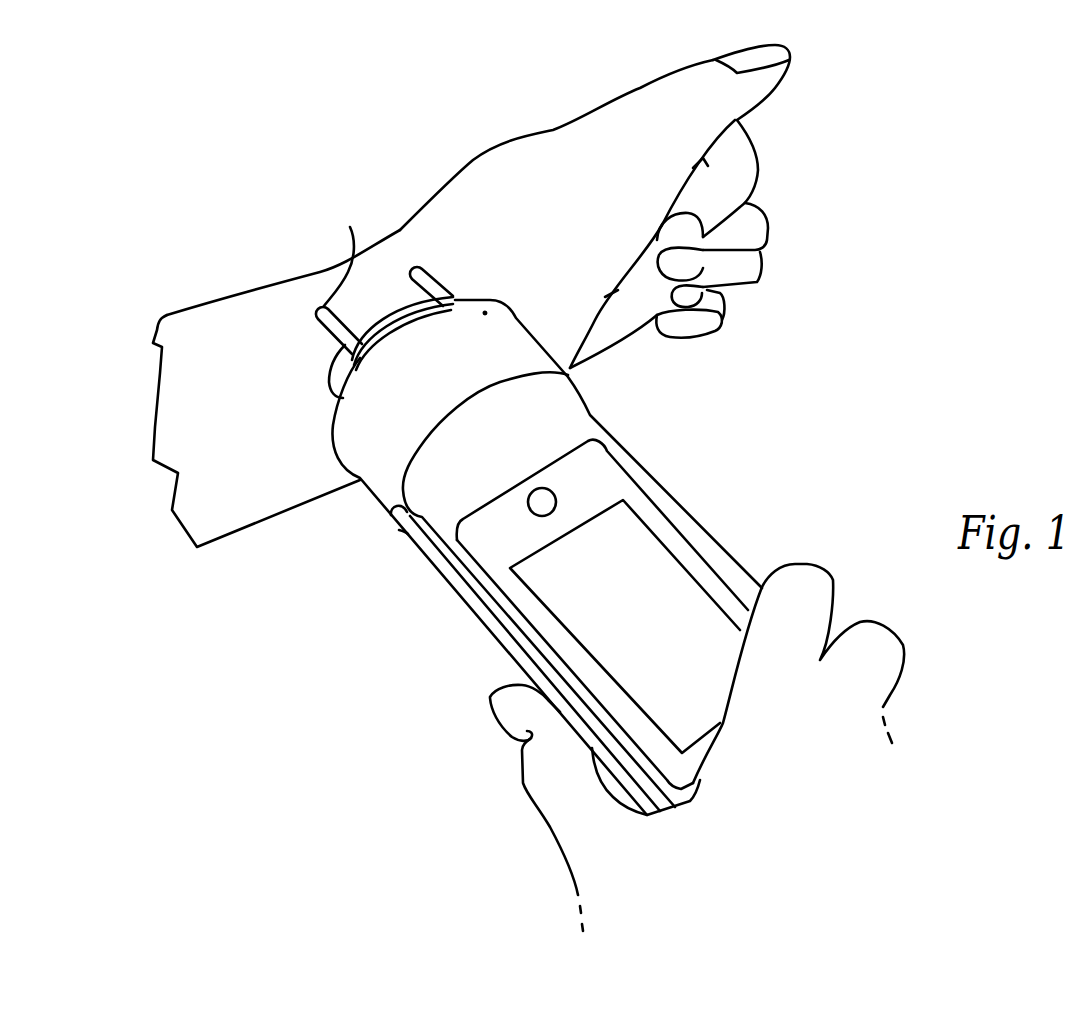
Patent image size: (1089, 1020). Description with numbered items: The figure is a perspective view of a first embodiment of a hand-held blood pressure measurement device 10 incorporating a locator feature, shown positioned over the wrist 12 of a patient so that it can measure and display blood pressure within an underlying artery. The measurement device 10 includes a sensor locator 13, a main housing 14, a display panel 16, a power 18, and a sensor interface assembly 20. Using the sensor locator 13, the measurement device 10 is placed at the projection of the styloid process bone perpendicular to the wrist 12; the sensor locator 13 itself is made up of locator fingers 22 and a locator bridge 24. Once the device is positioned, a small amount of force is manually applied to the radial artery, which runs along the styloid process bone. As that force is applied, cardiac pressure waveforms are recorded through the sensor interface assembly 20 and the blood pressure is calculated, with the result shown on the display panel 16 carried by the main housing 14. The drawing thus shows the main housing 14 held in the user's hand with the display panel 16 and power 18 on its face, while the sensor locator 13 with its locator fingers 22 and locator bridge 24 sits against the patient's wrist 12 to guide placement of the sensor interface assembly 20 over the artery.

The blood pressure measurement device 10 is at (678, 443).
The wrist 12 is at (254, 250).
The sensor locator 13 is at (459, 255).
The main housing 14 is at (472, 459).
The display panel 16 is at (614, 617).
The power 18 is at (542, 488).
The sensor interface assembly 20 is at (343, 375).
The locator fingers 22 is at (410, 268).
The locator bridge 24 is at (457, 296).